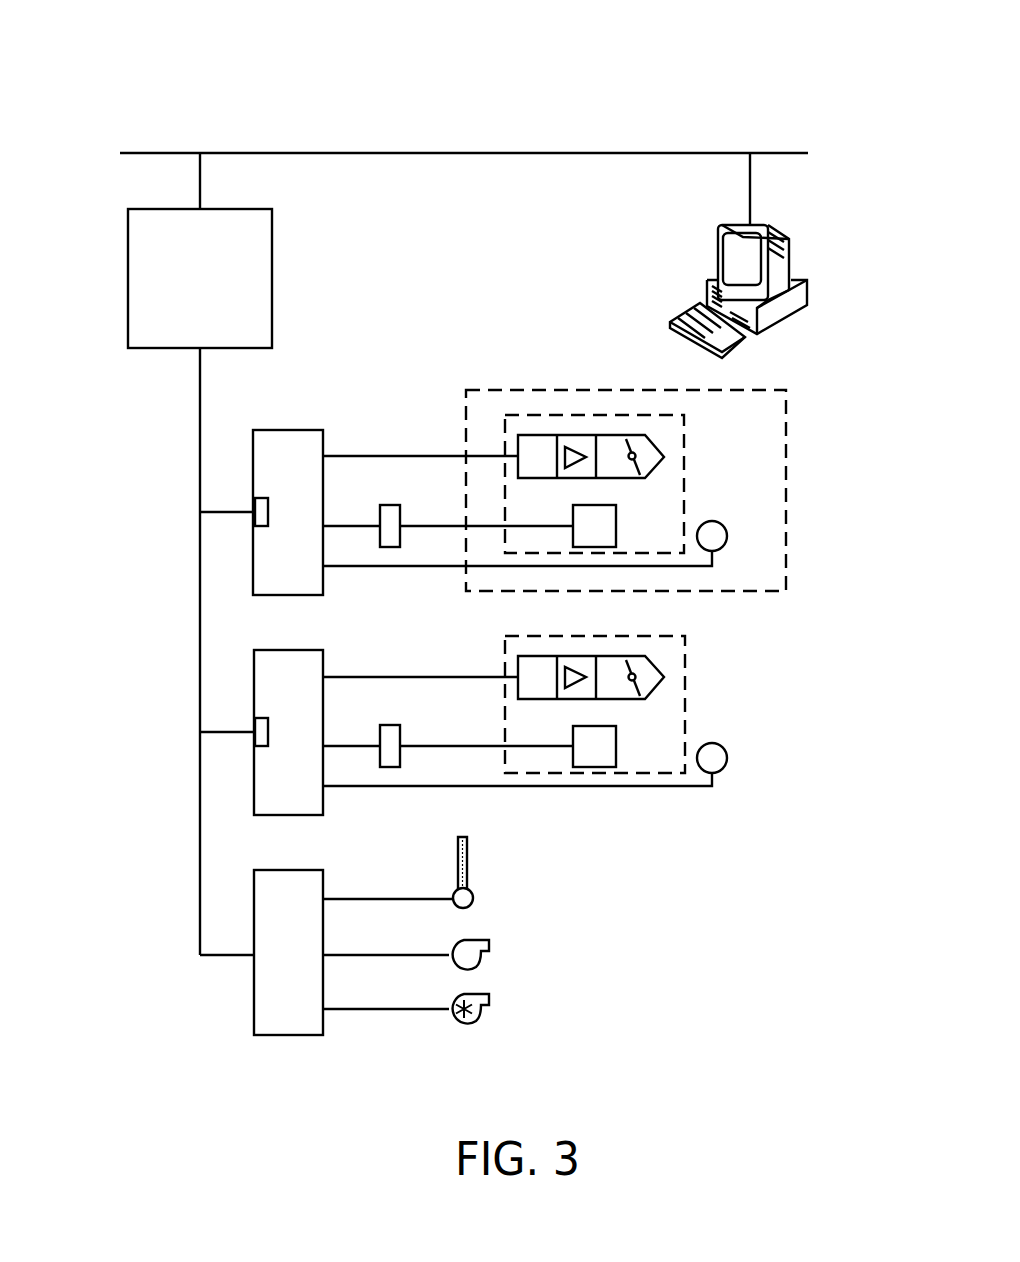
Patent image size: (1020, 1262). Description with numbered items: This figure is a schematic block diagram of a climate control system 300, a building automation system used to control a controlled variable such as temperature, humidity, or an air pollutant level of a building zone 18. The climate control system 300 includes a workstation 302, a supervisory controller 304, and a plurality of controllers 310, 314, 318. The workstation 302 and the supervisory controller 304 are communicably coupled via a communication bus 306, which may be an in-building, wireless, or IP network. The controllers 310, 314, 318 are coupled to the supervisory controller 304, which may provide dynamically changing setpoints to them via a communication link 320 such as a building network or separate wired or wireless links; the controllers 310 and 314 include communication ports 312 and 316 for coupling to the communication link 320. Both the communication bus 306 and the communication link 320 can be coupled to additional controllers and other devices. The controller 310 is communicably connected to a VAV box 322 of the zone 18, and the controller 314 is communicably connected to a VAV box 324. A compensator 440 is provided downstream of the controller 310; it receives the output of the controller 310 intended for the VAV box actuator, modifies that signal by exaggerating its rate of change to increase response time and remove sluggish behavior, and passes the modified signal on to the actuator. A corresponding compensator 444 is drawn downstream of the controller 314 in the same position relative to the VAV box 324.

The climate control system 300 is at (468, 58).
The workstation 302 is at (768, 318).
The supervisory controller 304 is at (262, 230).
The communication bus 306 is at (490, 155).
The controller 310 is at (263, 437).
The communication port 312 is at (257, 510).
The controller 314 is at (263, 657).
The communication port 316 is at (257, 730).
The controller 318 is at (288, 878).
The communication link 320 is at (197, 787).
The VAV box 322 is at (676, 440).
The VAV box 324 is at (676, 660).
The compensator 440 is at (387, 515).
The sensor / resistor element 444 is at (387, 735).
The zone 18 is at (770, 494).